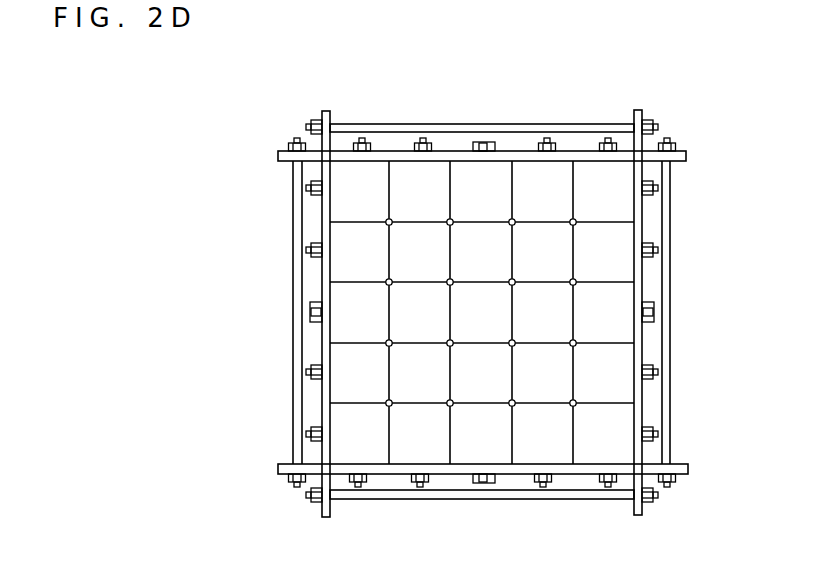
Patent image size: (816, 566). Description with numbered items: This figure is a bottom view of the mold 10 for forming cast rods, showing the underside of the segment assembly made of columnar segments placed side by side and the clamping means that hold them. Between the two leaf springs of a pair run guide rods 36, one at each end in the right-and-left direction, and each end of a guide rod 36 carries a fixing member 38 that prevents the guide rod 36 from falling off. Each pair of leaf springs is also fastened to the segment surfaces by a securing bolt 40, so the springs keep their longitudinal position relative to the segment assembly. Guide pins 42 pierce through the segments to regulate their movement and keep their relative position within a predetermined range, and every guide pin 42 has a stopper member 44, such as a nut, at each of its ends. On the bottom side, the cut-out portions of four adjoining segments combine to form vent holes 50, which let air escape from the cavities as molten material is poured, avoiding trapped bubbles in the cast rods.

The mold for forming cast rods 10 is at (659, 70).
The guide rod 36 is at (536, 127).
The fixing member 38 is at (292, 142).
The securing bolt 40 is at (483, 142).
The guide pin 42 is at (362, 143).
The stopper member 44 is at (373, 148).
The vent hole 50 is at (576, 280).